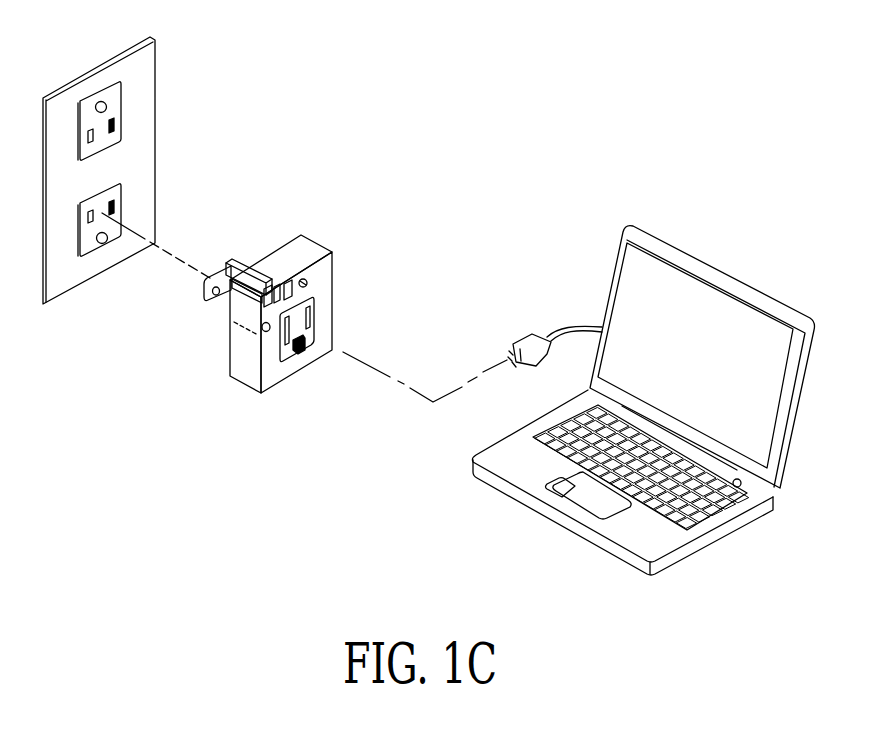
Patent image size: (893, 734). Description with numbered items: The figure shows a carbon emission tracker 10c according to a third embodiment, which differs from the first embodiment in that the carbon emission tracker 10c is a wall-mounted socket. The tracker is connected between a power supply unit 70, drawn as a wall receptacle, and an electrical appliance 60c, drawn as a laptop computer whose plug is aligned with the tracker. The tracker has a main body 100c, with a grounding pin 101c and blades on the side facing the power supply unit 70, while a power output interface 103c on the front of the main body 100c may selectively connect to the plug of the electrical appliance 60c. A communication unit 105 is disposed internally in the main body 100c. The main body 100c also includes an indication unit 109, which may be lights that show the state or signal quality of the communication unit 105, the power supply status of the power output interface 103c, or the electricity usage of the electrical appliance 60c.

The carbon emission tracker 10c is at (285, 300).
The power supply unit 70 is at (87, 300).
The main body 100c is at (247, 385).
The grounding pin 101c is at (212, 302).
The power output interface 103c is at (318, 320).
The communication unit 105 is at (308, 281).
The indication unit 109 is at (285, 283).
The electrical appliance 60c is at (731, 268).